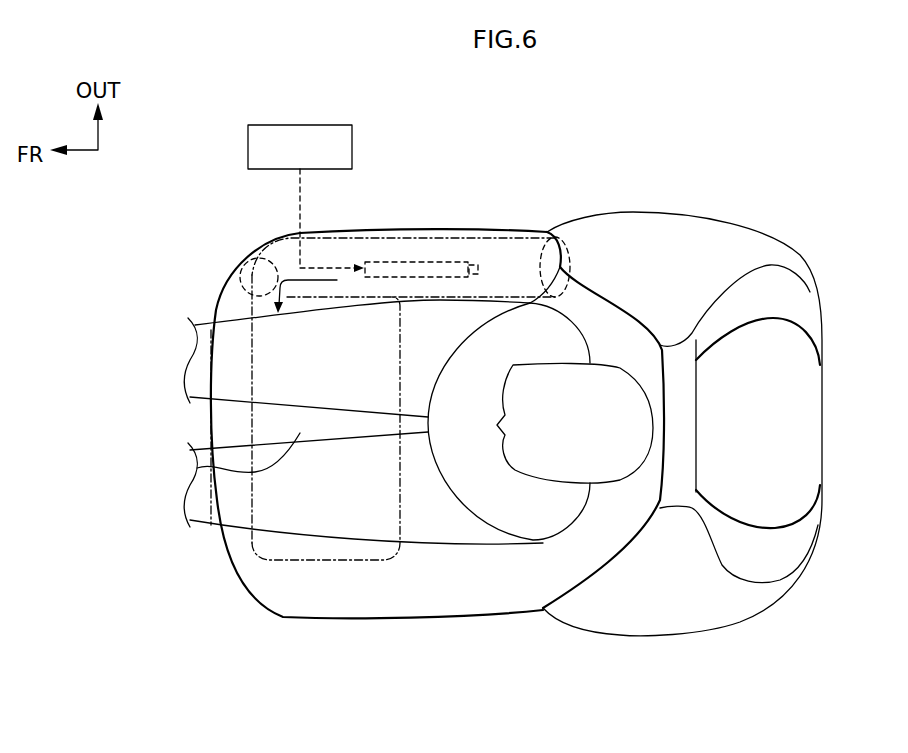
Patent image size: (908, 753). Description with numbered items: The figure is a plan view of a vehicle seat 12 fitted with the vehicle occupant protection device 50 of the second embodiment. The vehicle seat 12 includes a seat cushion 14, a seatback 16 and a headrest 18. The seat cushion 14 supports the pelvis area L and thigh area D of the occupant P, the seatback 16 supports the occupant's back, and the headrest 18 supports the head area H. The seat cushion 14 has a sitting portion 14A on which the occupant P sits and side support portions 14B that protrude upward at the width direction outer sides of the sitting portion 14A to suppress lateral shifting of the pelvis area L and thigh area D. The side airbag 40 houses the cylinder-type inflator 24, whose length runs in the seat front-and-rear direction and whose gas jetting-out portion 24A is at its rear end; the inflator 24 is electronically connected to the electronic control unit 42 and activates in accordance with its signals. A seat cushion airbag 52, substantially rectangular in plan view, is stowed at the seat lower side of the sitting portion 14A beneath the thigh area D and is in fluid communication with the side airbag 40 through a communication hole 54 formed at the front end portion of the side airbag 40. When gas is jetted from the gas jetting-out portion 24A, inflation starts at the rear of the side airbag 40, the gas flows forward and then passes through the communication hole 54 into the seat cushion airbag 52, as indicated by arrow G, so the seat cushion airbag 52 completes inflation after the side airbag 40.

The vehicle seat 12 is at (506, 625).
The seat cushion 14 is at (338, 620).
The sitting portion 14A is at (197, 468).
The side support portions 14B is at (517, 251).
The seatback 16 is at (714, 630).
The headrest 18 is at (803, 443).
The inflator 24 is at (380, 261).
The gas jetting-out portion 24A is at (475, 265).
The side airbag 40 is at (402, 239).
The electronic control unit 42 is at (305, 124).
The vehicle occupant protection device 50 is at (472, 187).
The seat cushion airbag 52 is at (240, 430).
The communication hole 54 is at (253, 248).
The arrow G is at (284, 280).
The pelvis area L is at (572, 268).
The occupant P is at (615, 364).
The head area H is at (633, 427).
The thigh area D is at (361, 412).